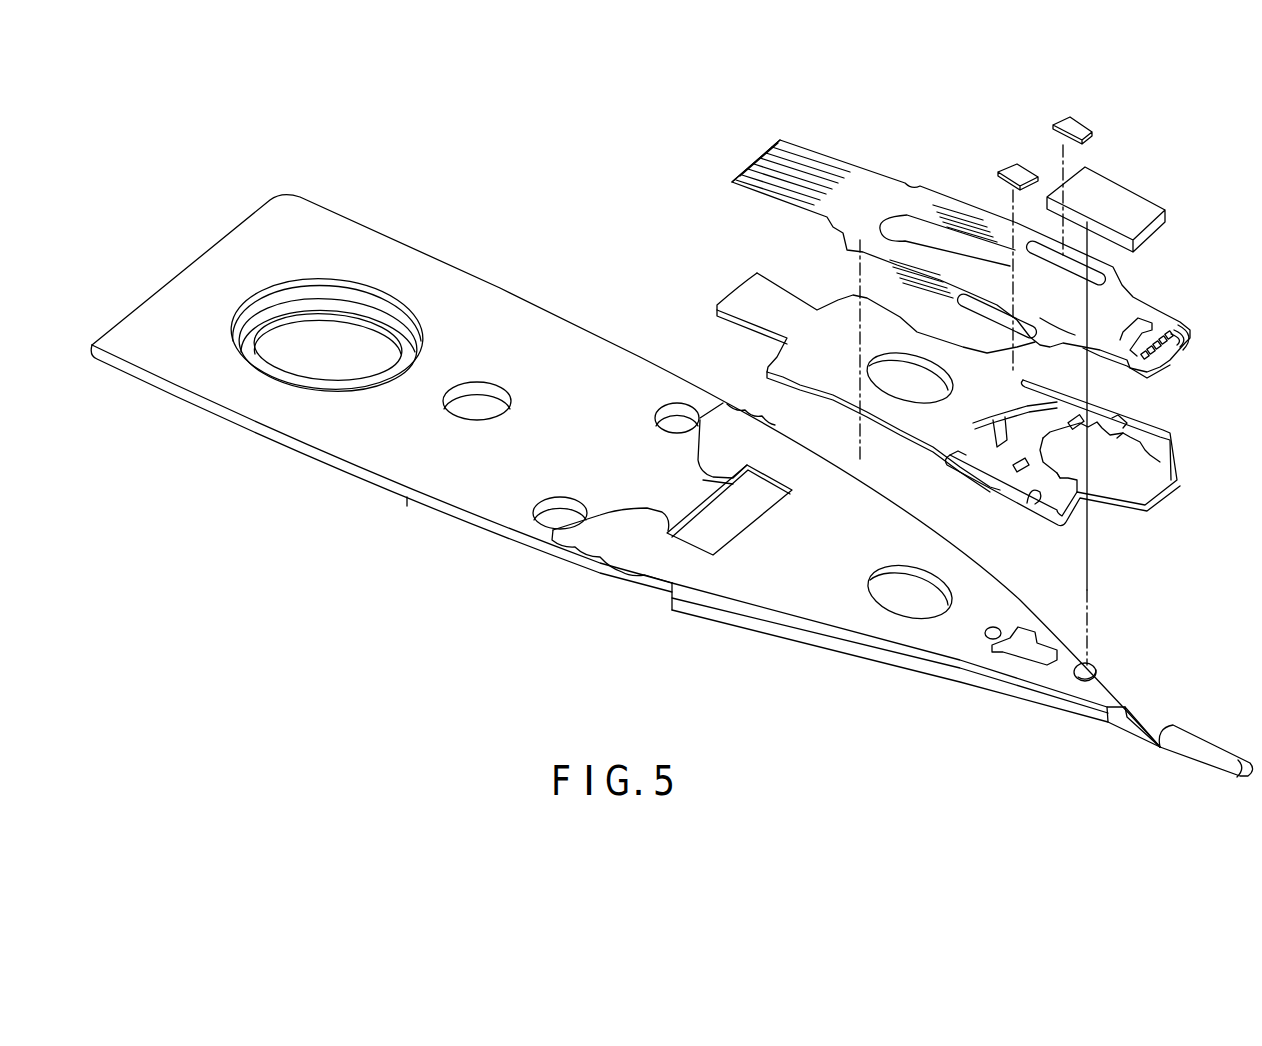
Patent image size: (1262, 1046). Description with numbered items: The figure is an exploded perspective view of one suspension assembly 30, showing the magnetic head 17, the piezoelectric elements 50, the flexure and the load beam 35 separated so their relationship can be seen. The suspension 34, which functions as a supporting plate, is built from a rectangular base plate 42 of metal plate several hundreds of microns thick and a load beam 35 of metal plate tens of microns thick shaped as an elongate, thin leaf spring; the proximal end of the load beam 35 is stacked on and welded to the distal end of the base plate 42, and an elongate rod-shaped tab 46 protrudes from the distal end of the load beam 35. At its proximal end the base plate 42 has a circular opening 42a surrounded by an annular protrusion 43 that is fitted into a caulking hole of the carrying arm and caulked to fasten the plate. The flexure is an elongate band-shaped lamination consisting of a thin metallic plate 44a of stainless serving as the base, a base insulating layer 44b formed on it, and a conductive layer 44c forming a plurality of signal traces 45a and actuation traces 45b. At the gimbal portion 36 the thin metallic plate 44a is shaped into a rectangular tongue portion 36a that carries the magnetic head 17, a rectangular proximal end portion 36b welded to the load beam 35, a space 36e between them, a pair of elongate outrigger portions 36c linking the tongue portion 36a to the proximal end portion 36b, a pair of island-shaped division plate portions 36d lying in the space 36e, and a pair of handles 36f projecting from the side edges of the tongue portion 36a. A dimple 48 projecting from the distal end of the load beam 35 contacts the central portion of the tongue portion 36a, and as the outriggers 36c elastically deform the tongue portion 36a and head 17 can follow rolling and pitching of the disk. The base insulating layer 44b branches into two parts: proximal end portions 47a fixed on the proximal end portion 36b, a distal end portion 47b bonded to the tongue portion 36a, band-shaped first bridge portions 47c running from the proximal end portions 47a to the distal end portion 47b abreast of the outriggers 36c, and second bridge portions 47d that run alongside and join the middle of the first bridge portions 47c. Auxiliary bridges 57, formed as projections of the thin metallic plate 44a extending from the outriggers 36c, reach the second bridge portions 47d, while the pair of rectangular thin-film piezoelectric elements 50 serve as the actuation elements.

The magnetic head 17 is at (1123, 192).
The suspension assembly 30 is at (686, 152).
The suspension 34 is at (671, 485).
The load beam 35 is at (806, 598).
The gimbal portion 36 is at (1202, 140).
The tongue portion 36a is at (1113, 475).
The proximal end portion 36b is at (963, 428).
The outrigger portions 36c is at (1077, 385).
The division plate portions 36d is at (1082, 420).
The space 36e is at (955, 475).
The handles 36f is at (1138, 445).
The base plate 42 is at (380, 453).
The circular opening 42a is at (337, 343).
The annular protrusion 43 is at (330, 343).
The thin metallic plate 44a is at (793, 373).
The base insulating layer 44b is at (788, 208).
The conductive layer 44c is at (827, 192).
The signal traces 45a is at (866, 199).
The actuation traces 45b is at (797, 170).
The tab 46 is at (1208, 748).
The proximal end portions 47a is at (993, 233).
The distal end portion 47b is at (1167, 350).
The first bridge portions 47c is at (1070, 277).
The second bridge portions 47d is at (1083, 255).
The dimple 48 is at (1092, 667).
The piezoelectric elements 50 is at (1015, 168).
The auxiliary bridges 57 is at (1122, 421).